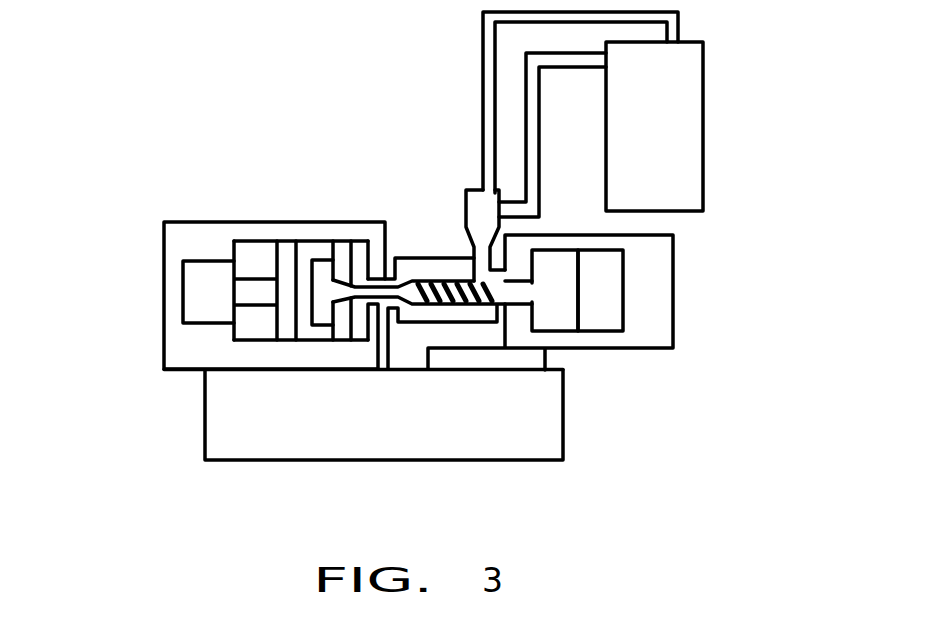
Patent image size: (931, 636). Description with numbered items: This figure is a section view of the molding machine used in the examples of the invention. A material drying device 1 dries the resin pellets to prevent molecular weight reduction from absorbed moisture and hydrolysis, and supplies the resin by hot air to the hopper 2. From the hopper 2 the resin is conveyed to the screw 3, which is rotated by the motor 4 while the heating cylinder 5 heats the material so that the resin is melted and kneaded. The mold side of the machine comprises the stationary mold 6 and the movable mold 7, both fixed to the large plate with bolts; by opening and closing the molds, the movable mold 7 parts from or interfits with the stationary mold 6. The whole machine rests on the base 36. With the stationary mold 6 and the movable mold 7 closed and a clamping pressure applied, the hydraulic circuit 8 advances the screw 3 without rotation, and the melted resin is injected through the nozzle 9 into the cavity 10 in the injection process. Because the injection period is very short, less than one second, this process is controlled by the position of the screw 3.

The material drying device 1 is at (677, 102).
The hopper 2 is at (478, 212).
The screw 3 is at (477, 302).
The motor 4 is at (565, 277).
The heating cylinder 5 is at (447, 316).
The stationary mold 6 is at (343, 250).
The movable mold 7 is at (307, 247).
The hydraulic circuit 8 is at (607, 311).
The nozzle 9 is at (375, 315).
The cavity 10 is at (322, 300).
The base 36 is at (205, 405).